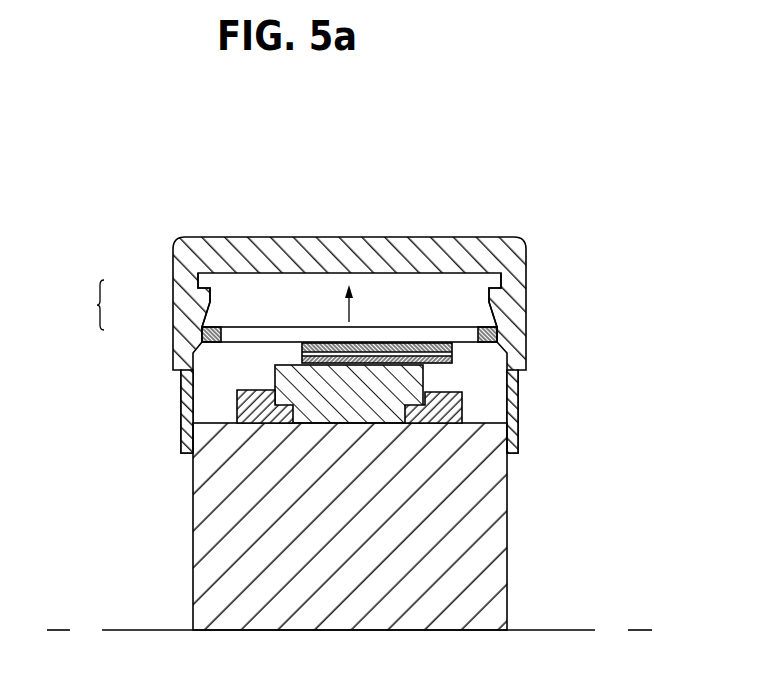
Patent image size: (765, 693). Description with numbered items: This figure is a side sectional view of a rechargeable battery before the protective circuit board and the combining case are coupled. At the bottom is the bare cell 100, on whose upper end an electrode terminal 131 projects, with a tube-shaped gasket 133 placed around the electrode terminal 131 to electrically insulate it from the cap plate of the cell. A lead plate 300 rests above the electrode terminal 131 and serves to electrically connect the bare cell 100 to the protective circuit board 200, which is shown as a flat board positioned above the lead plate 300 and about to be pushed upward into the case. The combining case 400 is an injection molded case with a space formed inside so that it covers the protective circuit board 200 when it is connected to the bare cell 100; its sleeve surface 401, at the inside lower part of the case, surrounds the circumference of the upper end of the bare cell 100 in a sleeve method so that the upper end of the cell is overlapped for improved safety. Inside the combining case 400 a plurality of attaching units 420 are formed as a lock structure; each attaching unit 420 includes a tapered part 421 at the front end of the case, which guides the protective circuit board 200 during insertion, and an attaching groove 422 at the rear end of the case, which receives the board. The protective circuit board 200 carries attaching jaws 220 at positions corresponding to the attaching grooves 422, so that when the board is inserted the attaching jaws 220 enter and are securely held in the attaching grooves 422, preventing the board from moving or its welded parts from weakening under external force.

The bare cell 100 is at (500, 507).
The electrode terminal 131 is at (424, 380).
The gasket 133 is at (462, 412).
The protective circuit board 200 is at (289, 335).
The attaching jaw 220 is at (483, 327).
The lead plate 300 is at (452, 353).
The combining case 400 is at (242, 247).
The sleeve surface 401 is at (186, 411).
The attaching unit 420 is at (79, 305).
The tapered part 421 is at (199, 338).
The attaching groove 422 is at (198, 286).